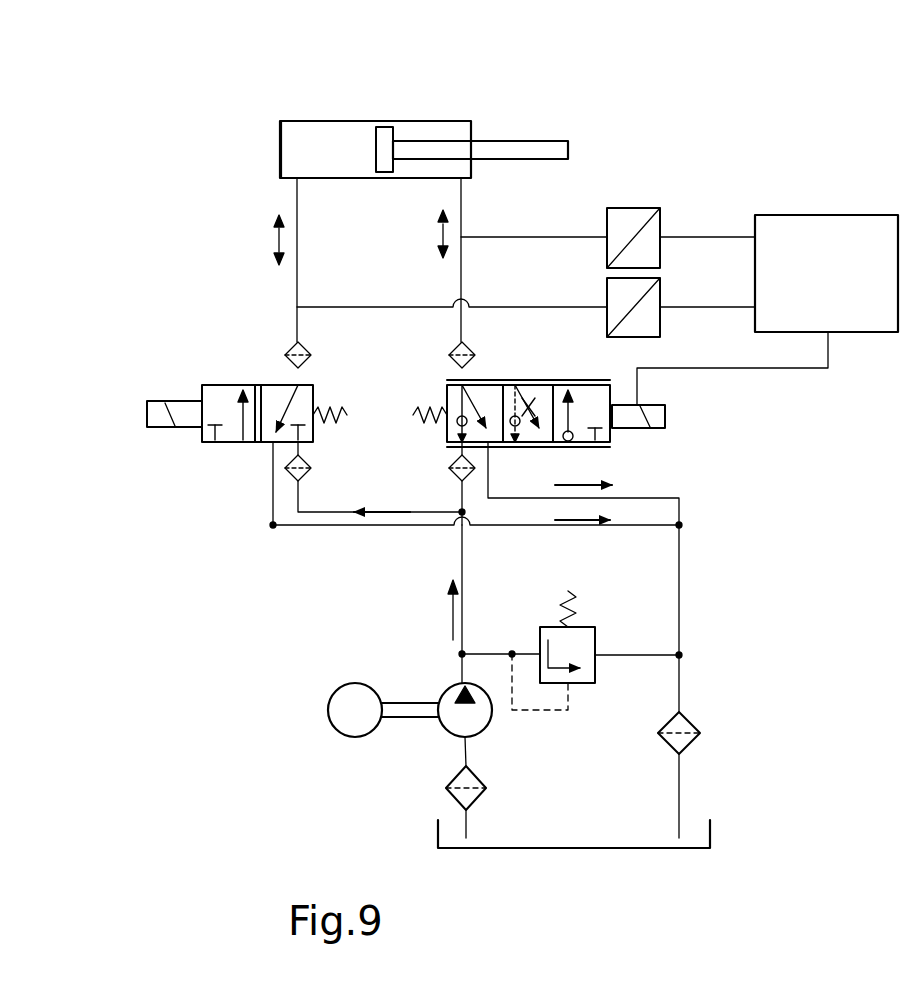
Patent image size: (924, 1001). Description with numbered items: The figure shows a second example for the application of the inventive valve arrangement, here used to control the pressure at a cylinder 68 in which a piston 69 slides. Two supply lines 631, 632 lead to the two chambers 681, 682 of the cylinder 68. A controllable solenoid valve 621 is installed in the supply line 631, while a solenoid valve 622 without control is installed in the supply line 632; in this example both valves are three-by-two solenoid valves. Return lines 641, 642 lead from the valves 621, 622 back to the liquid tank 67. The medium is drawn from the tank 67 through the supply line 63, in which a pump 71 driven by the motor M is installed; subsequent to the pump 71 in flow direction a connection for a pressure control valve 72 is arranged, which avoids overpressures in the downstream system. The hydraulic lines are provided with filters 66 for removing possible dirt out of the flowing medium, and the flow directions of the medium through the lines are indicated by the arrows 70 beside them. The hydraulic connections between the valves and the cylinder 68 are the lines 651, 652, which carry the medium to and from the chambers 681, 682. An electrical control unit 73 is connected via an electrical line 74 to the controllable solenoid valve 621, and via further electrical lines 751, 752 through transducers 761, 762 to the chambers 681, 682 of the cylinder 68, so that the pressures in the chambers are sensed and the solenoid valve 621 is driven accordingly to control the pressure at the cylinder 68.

The cylinder 68 is at (278, 148).
The cylinder chamber 682 is at (302, 135).
The cylinder chamber 681 is at (452, 130).
The piston 69 is at (387, 125).
The line 652 is at (302, 240).
The line 651 is at (465, 225).
The arrows 70 is at (442, 236).
The electrical line 751 is at (491, 238).
The electrical line 752 is at (512, 292).
The transducer 761 is at (655, 207).
The transducer 762 is at (662, 277).
The electrical control unit 73 is at (845, 290).
The electrical line 74 is at (710, 368).
The controllable solenoid valve 621 is at (670, 414).
The solenoid valve without control 622 is at (144, 428).
The filter 66 is at (448, 353).
The supply line 632 is at (290, 484).
The return line 642 is at (333, 537).
The return line 641 is at (597, 577).
The supply line 631 is at (465, 495).
The supply line 63 is at (466, 598).
The pump 71 is at (450, 688).
The pressure control valve 72 is at (604, 621).
The liquid tank 67 is at (580, 848).